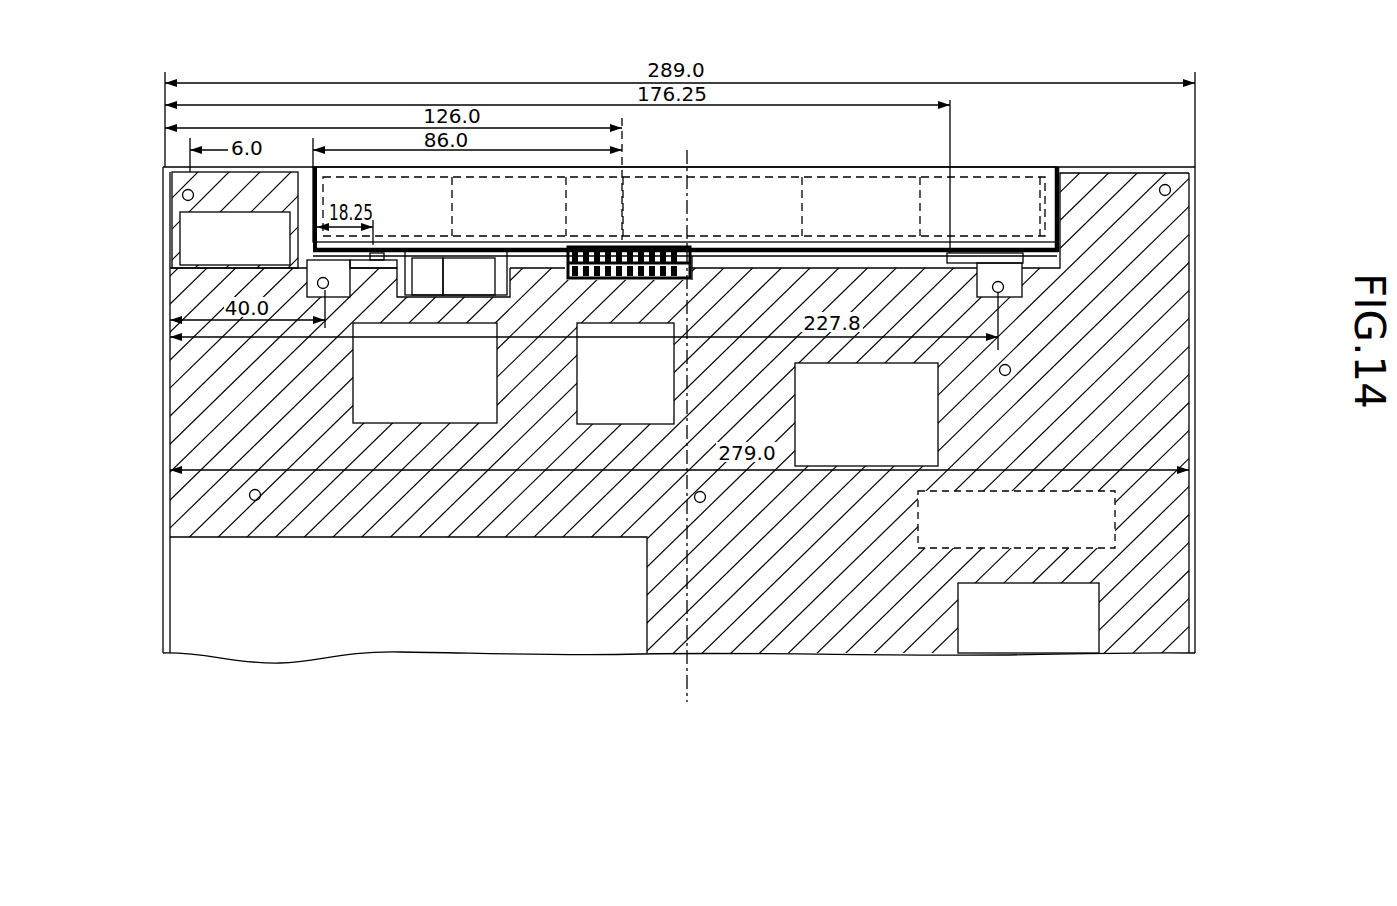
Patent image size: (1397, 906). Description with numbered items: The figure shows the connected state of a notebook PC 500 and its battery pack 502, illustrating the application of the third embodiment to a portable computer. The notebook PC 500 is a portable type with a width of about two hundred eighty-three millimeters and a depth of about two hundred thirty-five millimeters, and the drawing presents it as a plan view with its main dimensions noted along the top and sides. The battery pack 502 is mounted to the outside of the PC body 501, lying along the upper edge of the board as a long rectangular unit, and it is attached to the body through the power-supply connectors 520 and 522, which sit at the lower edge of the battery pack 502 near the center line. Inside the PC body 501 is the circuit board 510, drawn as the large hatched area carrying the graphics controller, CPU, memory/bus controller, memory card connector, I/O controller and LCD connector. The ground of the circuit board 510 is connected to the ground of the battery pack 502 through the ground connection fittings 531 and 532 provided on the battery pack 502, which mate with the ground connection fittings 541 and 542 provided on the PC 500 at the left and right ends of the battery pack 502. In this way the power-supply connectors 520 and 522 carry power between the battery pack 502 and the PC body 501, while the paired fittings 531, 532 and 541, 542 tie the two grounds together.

The notebook PC 500 is at (1205, 320).
The PC body 501 is at (1193, 457).
The battery pack 502 is at (878, 167).
The circuit board 510 is at (195, 405).
The power-supply connector 520 is at (635, 240).
The power-supply connector 522 is at (683, 253).
The ground connection fitting 531 is at (383, 240).
The ground connection fitting 532 is at (955, 250).
The ground connection fitting 541 is at (310, 260).
The ground connection fitting 542 is at (1002, 263).